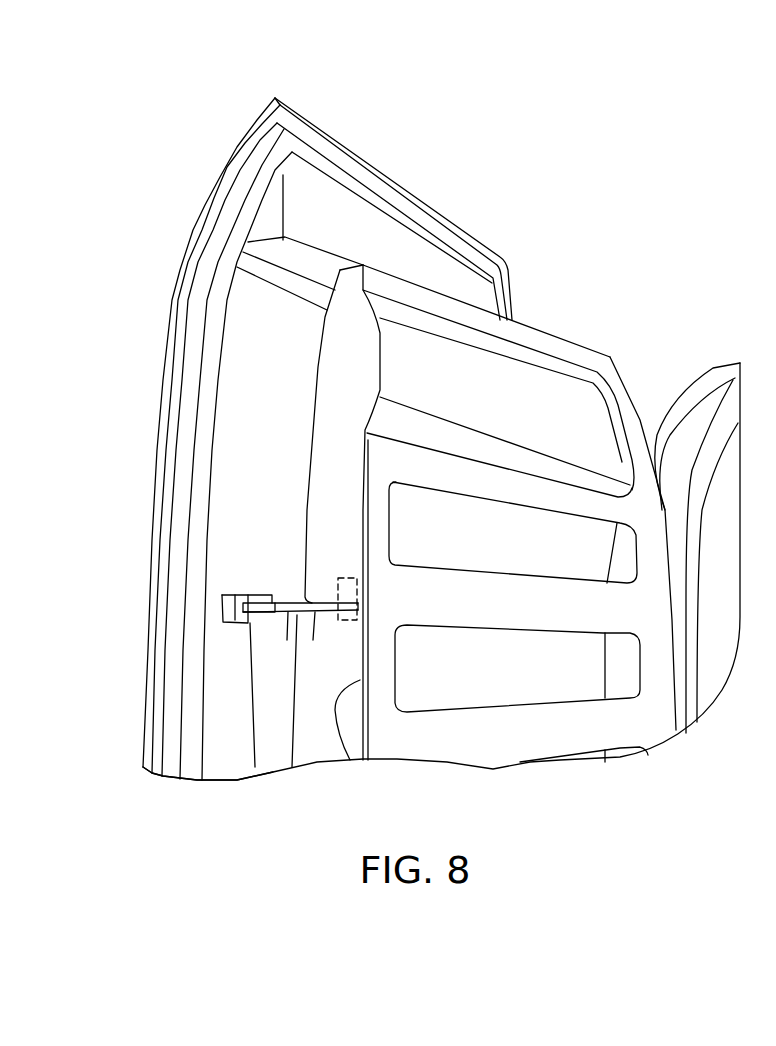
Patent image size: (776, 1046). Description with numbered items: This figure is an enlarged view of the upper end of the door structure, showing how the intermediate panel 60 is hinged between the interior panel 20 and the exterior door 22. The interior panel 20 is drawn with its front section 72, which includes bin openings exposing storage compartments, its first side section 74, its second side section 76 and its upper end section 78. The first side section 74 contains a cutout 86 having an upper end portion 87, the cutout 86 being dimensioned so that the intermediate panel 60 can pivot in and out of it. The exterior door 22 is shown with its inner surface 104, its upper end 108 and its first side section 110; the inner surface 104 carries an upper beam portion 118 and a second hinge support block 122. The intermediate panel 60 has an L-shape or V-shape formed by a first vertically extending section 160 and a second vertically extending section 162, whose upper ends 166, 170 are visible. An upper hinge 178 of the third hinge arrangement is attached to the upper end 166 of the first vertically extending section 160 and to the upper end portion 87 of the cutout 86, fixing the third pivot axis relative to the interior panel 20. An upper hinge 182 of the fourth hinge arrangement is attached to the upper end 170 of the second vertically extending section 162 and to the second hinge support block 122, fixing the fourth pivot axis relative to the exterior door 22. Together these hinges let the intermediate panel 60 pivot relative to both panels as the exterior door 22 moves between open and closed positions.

The interior panel 20 is at (600, 362).
The exterior door 22 is at (308, 120).
The intermediate panel 60 is at (288, 612).
The front section 72 is at (630, 503).
The first side section 74 is at (347, 375).
The second side section 76 is at (672, 617).
The upper end section 78 is at (570, 342).
The cutout 86 is at (352, 748).
The upper end portion 87 is at (318, 633).
The inner surface 104 is at (252, 342).
The upper end 108 is at (367, 158).
The first side section 110 is at (162, 459).
The upper beam portion 118 is at (420, 260).
The second hinge support block 122 is at (223, 605).
The first vertically extending section 160 is at (317, 740).
The second vertically extending section 162 is at (275, 753).
The upper end 166 is at (315, 612).
The upper end 170 is at (262, 623).
The upper hinge 178 is at (360, 610).
The upper hinge 182 is at (253, 600).